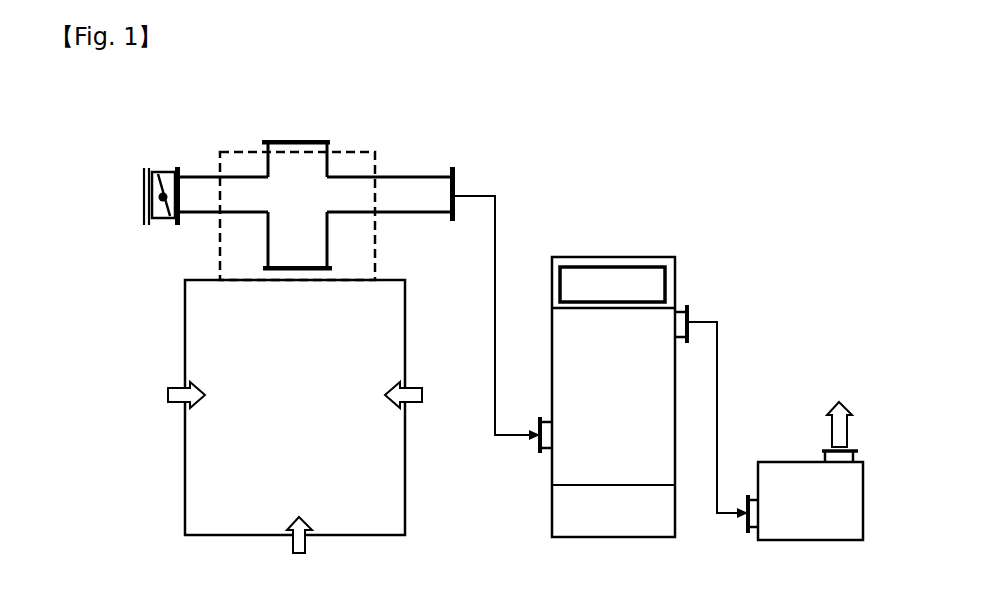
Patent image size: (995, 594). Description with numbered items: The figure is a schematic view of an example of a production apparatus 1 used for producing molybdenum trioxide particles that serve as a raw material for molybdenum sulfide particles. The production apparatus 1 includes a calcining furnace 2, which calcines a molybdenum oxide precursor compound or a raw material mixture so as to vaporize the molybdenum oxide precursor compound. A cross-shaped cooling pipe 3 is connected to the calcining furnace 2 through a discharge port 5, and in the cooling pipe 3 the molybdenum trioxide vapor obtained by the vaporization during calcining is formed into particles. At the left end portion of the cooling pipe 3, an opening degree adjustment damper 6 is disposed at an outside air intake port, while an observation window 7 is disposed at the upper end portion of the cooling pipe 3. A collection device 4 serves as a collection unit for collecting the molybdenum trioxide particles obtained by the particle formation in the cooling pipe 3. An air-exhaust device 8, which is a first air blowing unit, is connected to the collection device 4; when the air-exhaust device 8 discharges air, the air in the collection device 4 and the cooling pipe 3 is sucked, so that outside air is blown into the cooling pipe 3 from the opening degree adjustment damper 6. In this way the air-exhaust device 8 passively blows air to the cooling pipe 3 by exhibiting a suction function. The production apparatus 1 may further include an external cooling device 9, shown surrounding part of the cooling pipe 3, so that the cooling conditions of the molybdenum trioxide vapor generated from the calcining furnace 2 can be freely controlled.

The production apparatus 1 is at (772, 163).
The calcining furnace 2 is at (200, 464).
The cooling pipe 3 is at (428, 190).
The collection device 4 is at (562, 473).
The discharge port 5 is at (268, 272).
The opening degree adjustment damper 6 is at (163, 173).
The observation window 7 is at (296, 137).
The air-exhaust device 8 is at (784, 470).
The external cooling device 9 is at (243, 165).